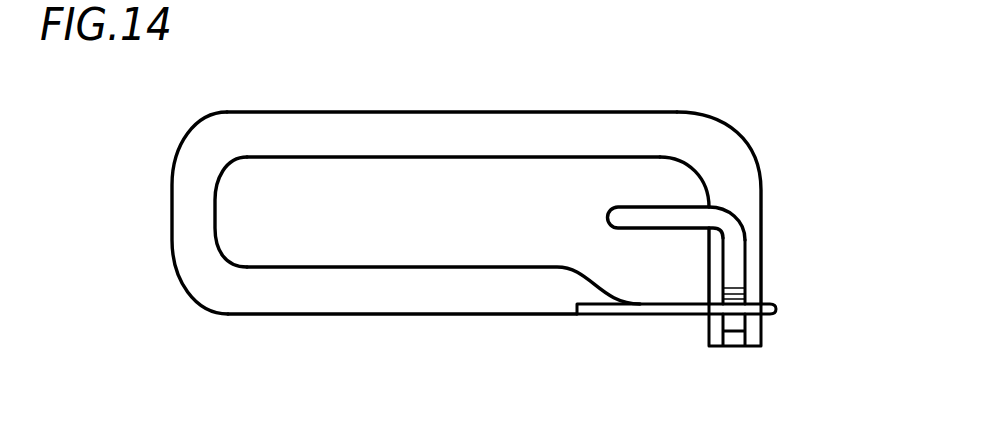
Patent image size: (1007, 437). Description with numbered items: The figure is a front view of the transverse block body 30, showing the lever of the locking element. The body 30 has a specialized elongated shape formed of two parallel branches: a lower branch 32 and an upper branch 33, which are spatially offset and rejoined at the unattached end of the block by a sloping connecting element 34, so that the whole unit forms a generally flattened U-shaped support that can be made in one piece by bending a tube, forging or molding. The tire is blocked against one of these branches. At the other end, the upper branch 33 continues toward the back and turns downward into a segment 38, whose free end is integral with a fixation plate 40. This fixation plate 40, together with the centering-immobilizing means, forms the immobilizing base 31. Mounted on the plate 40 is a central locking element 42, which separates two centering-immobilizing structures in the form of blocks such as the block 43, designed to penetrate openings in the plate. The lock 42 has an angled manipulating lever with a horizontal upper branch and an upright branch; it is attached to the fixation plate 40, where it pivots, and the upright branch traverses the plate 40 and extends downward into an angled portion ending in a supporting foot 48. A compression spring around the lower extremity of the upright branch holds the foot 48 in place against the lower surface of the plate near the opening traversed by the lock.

The transverse block body 30 is at (473, 228).
The immobilizing base 31 is at (670, 346).
The lower branch 32 is at (378, 288).
The upper branch 33 is at (437, 132).
The sloping connecting element 34 is at (190, 200).
The segment 38 is at (755, 240).
The fixation plate 40 is at (638, 324).
The central locking element 42 is at (638, 179).
The block 43 is at (752, 338).
The supporting foot 48 is at (722, 355).